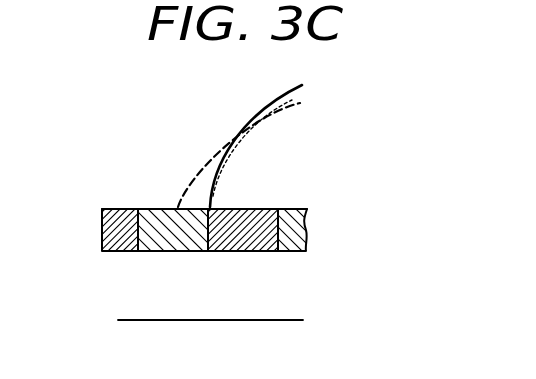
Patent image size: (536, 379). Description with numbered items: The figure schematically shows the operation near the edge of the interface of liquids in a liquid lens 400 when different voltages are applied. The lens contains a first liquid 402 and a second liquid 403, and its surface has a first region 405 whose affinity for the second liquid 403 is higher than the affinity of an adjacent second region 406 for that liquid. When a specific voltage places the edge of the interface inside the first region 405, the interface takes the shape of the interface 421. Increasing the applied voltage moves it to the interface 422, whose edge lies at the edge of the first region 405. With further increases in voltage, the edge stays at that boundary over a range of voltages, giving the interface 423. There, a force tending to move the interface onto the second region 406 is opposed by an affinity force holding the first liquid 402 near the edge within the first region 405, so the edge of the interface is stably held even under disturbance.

The liquid lens 400 is at (101, 87).
The first liquid 402 is at (282, 175).
The second liquid 403 is at (162, 173).
The first region 405 is at (175, 242).
The second region 406 is at (248, 242).
The interface 421 is at (307, 100).
The interface 422 is at (256, 127).
The interface 423 is at (235, 157).